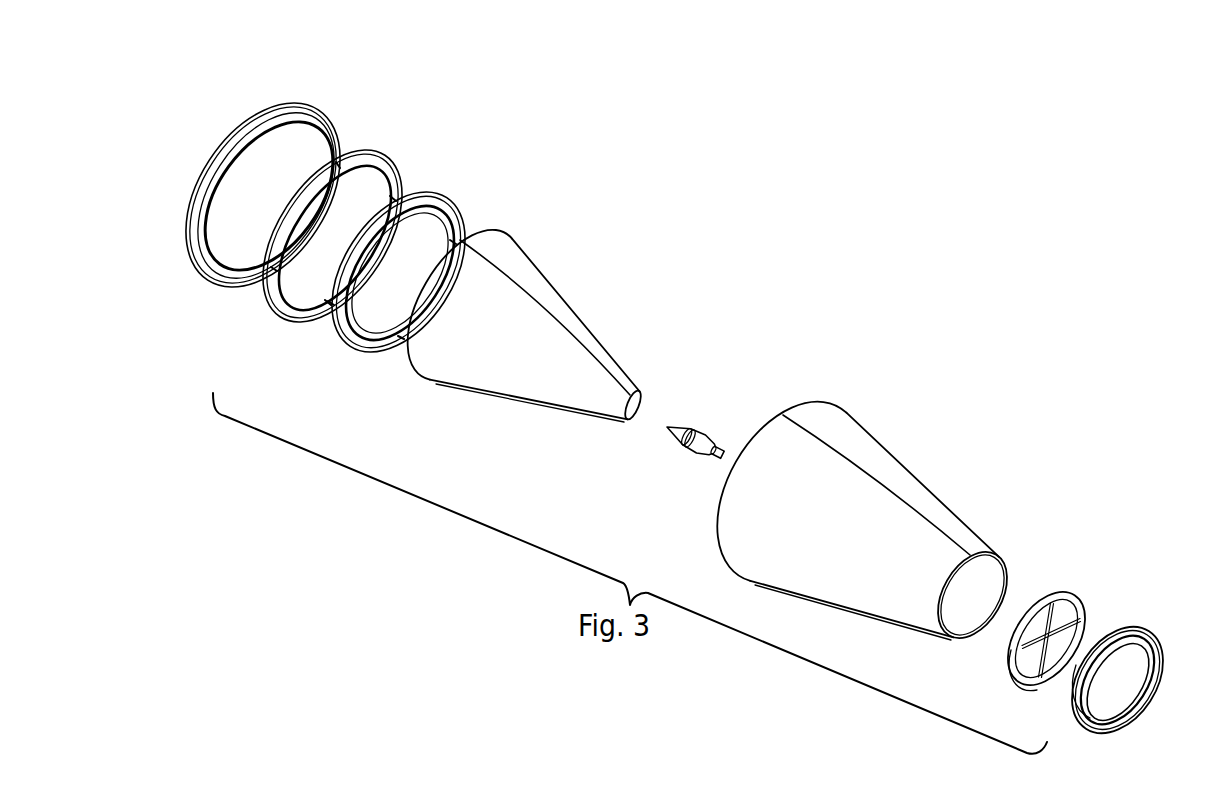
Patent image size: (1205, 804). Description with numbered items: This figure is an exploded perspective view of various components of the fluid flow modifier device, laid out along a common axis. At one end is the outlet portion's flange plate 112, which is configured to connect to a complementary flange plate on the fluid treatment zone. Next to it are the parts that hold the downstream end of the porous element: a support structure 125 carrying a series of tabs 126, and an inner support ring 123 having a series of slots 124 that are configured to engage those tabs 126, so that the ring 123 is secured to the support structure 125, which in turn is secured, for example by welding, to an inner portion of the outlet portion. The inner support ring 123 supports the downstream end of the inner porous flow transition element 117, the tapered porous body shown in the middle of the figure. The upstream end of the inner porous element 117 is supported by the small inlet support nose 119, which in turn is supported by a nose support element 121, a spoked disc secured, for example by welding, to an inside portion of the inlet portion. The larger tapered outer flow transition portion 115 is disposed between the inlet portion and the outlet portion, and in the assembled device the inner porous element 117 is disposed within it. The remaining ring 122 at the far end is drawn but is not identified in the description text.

The flange plate 112 is at (298, 103).
The tabs 126 is at (357, 150).
The support structure 125 is at (370, 148).
The slots 124 is at (404, 193).
The inner support ring 123 is at (433, 190).
The inner porous flow transition element 117 is at (543, 285).
The inlet support nose 119 is at (704, 437).
The tapered outer flow transition portion 115 is at (882, 467).
The nose support element 121 is at (1053, 592).
The rear ring 122 is at (1157, 635).